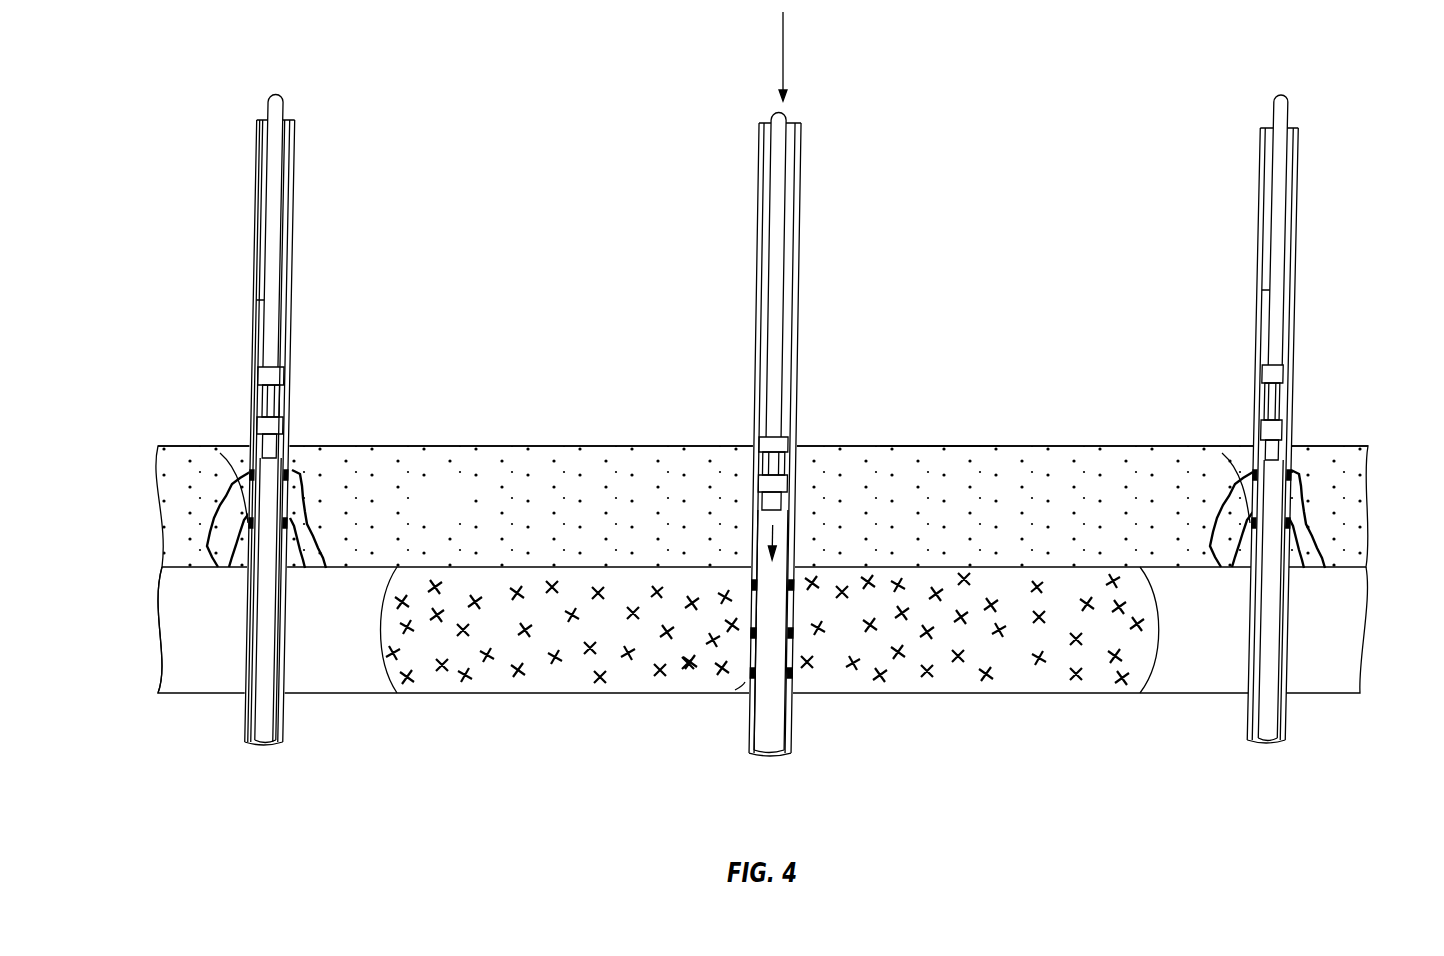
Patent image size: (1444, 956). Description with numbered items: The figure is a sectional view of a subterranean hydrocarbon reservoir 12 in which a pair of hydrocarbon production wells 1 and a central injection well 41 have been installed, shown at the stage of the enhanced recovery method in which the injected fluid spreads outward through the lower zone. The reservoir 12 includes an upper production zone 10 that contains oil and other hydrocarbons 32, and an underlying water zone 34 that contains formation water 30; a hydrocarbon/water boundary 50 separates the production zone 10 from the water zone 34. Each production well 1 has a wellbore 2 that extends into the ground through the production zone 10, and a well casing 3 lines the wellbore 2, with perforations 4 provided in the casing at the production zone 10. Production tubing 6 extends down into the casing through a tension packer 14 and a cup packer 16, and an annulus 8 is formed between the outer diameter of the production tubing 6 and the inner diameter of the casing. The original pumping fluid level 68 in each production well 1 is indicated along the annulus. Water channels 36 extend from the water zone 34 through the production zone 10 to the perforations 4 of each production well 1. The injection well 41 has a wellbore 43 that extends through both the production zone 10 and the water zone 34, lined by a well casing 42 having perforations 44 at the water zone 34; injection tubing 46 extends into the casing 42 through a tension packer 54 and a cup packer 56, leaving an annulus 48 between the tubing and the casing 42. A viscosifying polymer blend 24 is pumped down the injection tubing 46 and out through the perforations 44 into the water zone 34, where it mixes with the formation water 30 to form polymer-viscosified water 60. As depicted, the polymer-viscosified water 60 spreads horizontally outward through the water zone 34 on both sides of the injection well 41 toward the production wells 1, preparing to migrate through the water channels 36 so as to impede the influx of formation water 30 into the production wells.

The hydrocarbon production well 1 is at (204, 118).
The wellbore 2 is at (286, 198).
The well casing 3 is at (257, 205).
The perforations 4 is at (235, 552).
The production tubing 6 is at (285, 100).
The annulus 8 is at (252, 300).
The production zone 10 is at (524, 446).
The hydrocarbon reservoir 12 is at (936, 440).
The tension packer 14 is at (262, 375).
The cup packer 16 is at (290, 425).
The viscosifying polymer blend 24 is at (782, 42).
The formation water 30 is at (306, 640).
The hydrocarbons 32 is at (455, 516).
The water zone 34 is at (550, 693).
The water channels 36 is at (302, 510).
The injection well 41 is at (720, 125).
The well casing 42 is at (795, 210).
The wellbore 43 is at (757, 205).
The perforations 44 is at (748, 688).
The injection tubing 46 is at (790, 115).
The annulus 48 is at (750, 297).
The hydrocarbon/water boundary 50 is at (200, 568).
The tension packer 54 is at (765, 445).
The cup packer 56 is at (787, 487).
The polymer-viscosified water 60 is at (1020, 693).
The original pumping fluid level 68 is at (257, 232).